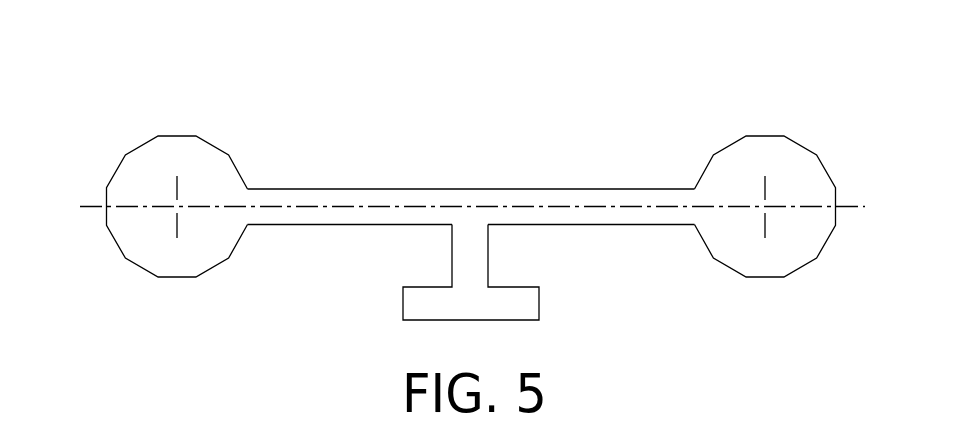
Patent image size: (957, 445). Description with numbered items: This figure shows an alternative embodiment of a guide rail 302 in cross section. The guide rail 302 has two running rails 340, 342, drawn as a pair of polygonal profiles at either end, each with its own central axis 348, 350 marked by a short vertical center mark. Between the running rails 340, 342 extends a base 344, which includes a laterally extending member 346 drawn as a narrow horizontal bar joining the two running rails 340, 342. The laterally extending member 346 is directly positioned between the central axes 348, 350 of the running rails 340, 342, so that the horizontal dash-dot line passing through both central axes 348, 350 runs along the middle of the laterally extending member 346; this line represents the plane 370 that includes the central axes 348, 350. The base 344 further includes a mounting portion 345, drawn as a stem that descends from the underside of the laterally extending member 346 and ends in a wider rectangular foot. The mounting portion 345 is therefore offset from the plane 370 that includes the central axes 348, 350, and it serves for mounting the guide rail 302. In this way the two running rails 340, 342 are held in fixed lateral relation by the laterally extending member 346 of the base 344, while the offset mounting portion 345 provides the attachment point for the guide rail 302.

The guide rail 302 is at (622, 108).
The running rail 340 is at (133, 178).
The running rail 342 is at (795, 167).
The base 344 is at (632, 275).
The mounting portion 345 is at (532, 305).
The laterally extending member 346 is at (313, 189).
The central axis 348 is at (177, 207).
The central axis 350 is at (766, 207).
The plane 370 is at (862, 206).